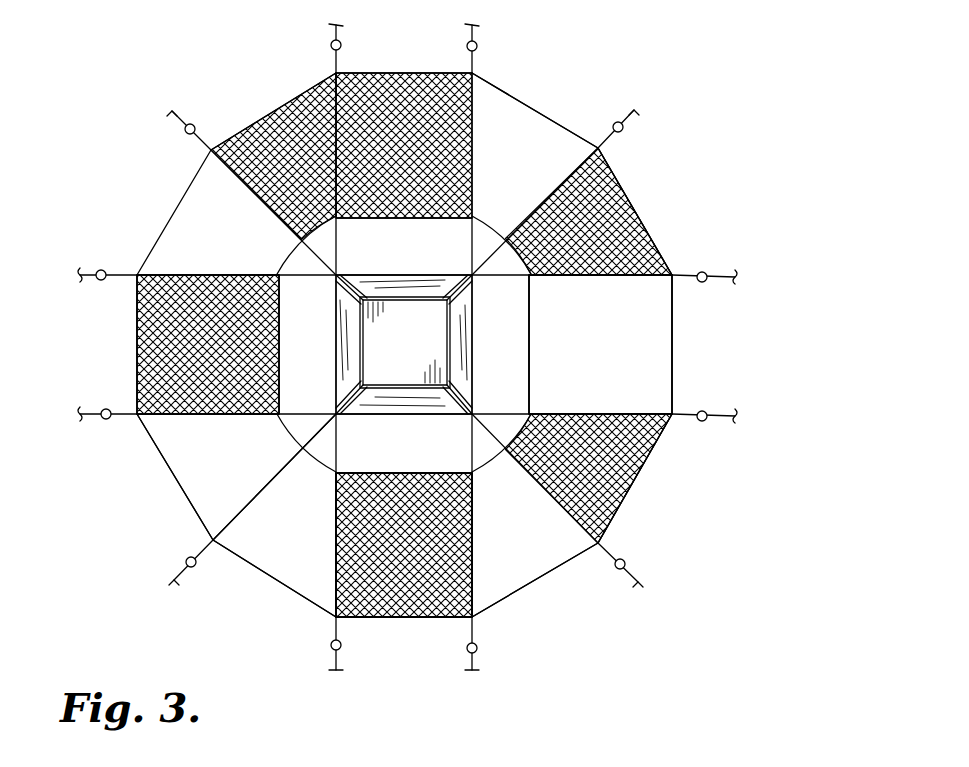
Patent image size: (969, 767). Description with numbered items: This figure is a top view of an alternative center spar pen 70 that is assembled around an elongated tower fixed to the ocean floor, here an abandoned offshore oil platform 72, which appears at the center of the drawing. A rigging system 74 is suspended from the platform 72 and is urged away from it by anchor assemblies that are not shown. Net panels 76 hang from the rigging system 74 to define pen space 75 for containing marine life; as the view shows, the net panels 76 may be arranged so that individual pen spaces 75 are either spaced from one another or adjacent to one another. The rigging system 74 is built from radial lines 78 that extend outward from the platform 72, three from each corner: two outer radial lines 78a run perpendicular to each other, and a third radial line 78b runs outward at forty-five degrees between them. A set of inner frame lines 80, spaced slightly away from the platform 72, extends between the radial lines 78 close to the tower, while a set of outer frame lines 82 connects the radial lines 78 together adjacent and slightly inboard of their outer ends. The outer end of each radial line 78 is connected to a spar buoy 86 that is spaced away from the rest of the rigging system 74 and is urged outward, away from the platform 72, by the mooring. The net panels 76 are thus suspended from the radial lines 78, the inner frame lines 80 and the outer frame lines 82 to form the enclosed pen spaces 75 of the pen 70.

The center spar pen 70 is at (715, 172).
The offshore oil platform 72 is at (418, 364).
The rigging system 74 is at (275, 104).
The pen space 75 is at (476, 147).
The net panels 76 is at (232, 136).
The radial lines 78 is at (334, 578).
The outer radial lines 78a is at (473, 176).
The third radial line 78b is at (248, 503).
The inner frame lines 80 is at (338, 224).
The outer frame lines 82 is at (137, 357).
The spar buoy 86 is at (100, 270).